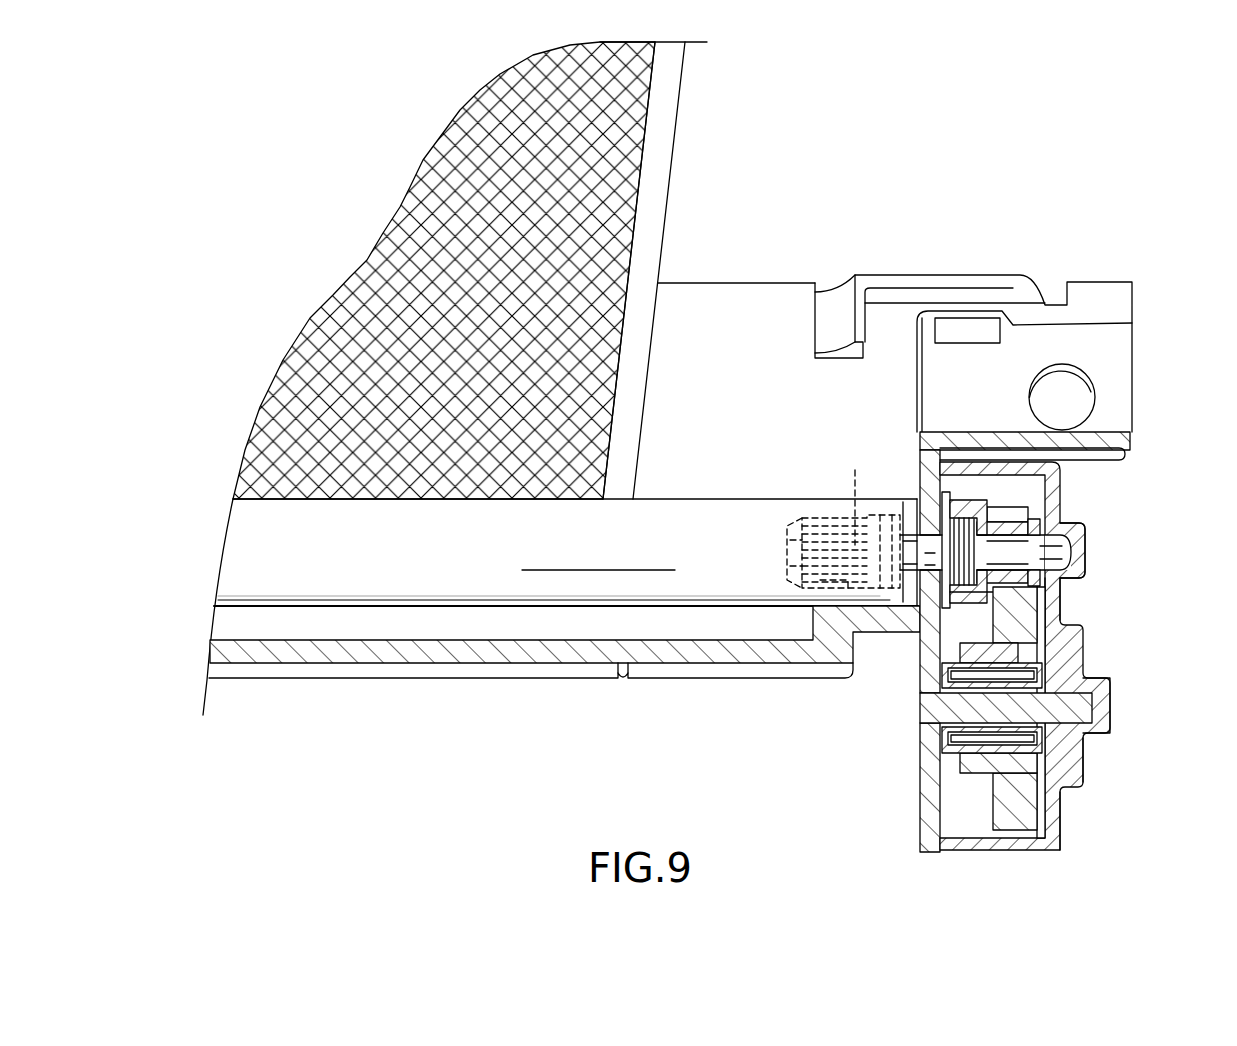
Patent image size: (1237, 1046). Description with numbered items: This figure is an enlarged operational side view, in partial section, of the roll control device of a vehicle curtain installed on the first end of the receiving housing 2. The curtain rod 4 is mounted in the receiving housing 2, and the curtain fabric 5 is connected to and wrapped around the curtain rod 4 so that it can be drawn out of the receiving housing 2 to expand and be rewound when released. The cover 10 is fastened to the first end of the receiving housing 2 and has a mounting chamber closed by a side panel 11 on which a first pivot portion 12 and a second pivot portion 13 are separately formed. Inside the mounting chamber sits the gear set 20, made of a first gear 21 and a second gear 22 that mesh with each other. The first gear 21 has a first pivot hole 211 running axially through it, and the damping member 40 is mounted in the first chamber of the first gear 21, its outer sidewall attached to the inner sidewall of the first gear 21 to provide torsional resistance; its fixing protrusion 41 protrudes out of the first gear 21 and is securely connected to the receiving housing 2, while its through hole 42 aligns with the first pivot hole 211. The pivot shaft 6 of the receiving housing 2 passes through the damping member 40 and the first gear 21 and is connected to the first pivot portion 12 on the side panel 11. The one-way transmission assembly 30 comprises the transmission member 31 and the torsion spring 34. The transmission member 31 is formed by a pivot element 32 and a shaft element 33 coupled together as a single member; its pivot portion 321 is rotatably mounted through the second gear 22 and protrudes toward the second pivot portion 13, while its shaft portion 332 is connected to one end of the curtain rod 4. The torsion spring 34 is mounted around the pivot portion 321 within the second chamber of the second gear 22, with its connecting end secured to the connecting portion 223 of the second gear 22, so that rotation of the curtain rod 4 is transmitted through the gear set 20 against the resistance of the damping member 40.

The receiving housing 2 is at (538, 682).
The curtain rod 4 is at (385, 587).
The curtain fabric 5 is at (702, 139).
The pivot shaft 6 is at (980, 718).
The cover 10 is at (1075, 492).
The side panel 11 is at (1056, 604).
The first pivot portion 12 is at (1085, 753).
The second pivot portion 13 is at (1082, 532).
The gear set 20 is at (985, 810).
The first gear 21 is at (975, 778).
The second gear 22 is at (1008, 500).
The one-way transmission assembly 30 is at (890, 485).
The transmission member 31 is at (793, 512).
The pivot element 32 is at (1070, 553).
The shaft element 33 is at (829, 592).
The torsion spring 34 is at (955, 517).
The damping member 40 is at (1015, 768).
The fixing protrusion 41 is at (937, 730).
The through hole 42 is at (947, 690).
The first pivot hole 211 is at (1053, 693).
The connecting portion 223 is at (963, 507).
The pivot portion 321 is at (1032, 556).
The shaft portion 332 is at (855, 470).